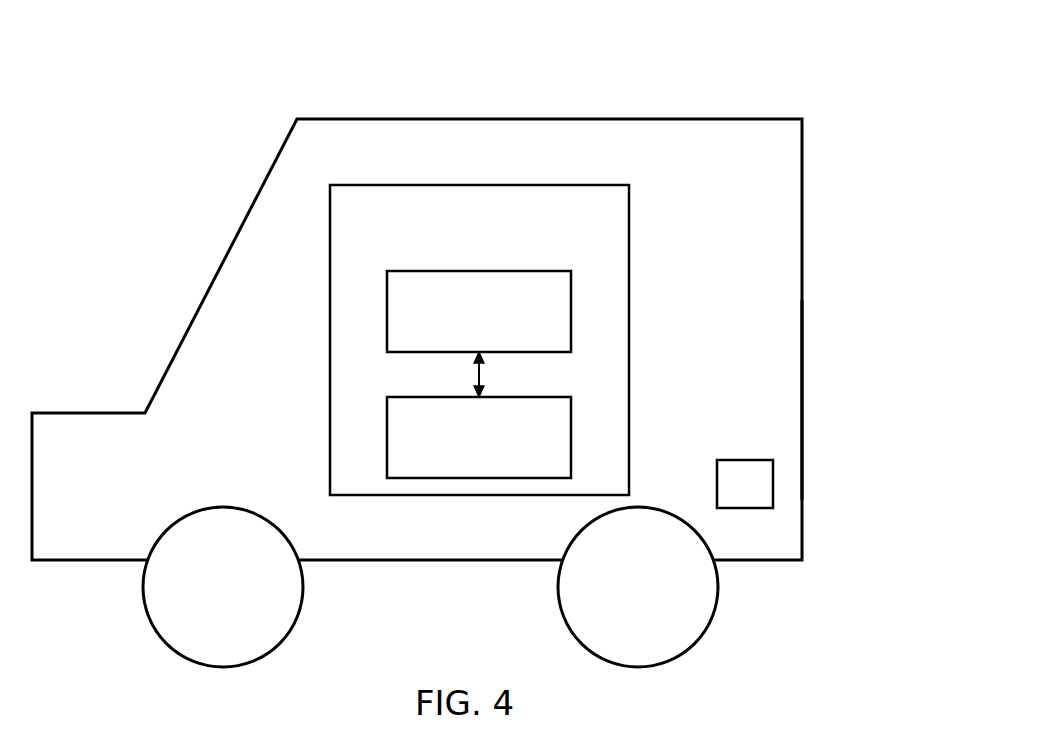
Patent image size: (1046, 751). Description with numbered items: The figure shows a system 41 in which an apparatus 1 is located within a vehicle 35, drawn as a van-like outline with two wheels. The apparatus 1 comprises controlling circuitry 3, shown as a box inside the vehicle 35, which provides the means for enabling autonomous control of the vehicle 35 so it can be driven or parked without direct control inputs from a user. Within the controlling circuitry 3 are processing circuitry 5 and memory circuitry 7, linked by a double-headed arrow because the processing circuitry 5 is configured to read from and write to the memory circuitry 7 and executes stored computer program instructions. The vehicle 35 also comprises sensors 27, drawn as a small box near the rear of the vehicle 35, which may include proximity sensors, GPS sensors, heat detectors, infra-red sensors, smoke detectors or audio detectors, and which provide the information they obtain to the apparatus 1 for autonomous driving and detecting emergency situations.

The system 41 is at (637, 78).
The controlling circuitry 3 is at (573, 185).
The apparatus 1 is at (630, 292).
The processing circuitry 5 is at (572, 310).
The memory circuitry 7 is at (572, 440).
The vehicle 35 is at (803, 398).
The sensors 27 is at (774, 483).